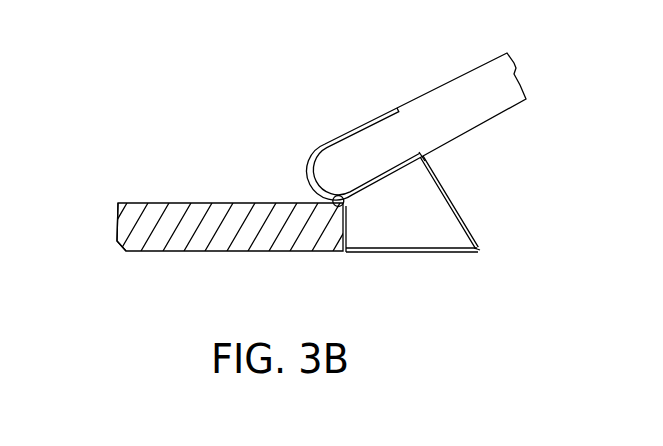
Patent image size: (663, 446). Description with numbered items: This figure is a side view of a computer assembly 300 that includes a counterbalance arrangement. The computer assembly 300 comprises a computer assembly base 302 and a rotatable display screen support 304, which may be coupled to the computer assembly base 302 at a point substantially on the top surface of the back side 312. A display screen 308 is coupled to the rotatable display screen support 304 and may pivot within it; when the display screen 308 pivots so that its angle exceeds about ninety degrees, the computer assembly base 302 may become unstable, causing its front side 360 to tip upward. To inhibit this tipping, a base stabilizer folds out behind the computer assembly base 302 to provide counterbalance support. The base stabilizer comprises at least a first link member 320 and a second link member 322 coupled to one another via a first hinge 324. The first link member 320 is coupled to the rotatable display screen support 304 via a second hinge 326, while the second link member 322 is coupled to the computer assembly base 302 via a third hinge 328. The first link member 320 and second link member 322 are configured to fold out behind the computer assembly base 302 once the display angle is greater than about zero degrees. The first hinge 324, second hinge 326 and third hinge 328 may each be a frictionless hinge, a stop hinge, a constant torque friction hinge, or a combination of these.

The computer assembly 300 is at (350, 112).
The computer assembly base 302 is at (253, 238).
The rotatable display screen support 304 is at (309, 158).
The display screen 308 is at (472, 90).
The back side 312 is at (350, 231).
The first link member 320 is at (452, 206).
The second link member 322 is at (456, 253).
The first hinge 324 is at (479, 251).
The second hinge 326 is at (428, 158).
The third hinge 328 is at (348, 253).
The front side 360 is at (126, 235).